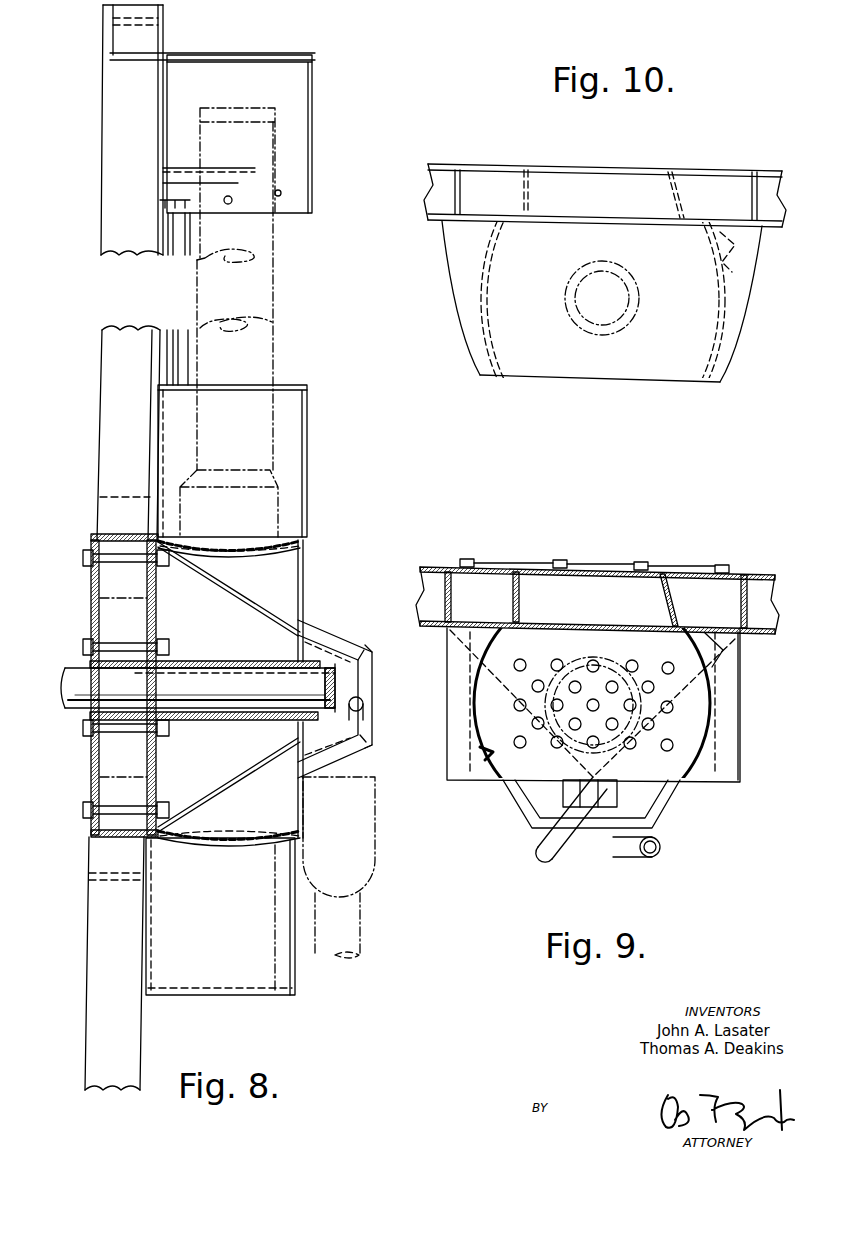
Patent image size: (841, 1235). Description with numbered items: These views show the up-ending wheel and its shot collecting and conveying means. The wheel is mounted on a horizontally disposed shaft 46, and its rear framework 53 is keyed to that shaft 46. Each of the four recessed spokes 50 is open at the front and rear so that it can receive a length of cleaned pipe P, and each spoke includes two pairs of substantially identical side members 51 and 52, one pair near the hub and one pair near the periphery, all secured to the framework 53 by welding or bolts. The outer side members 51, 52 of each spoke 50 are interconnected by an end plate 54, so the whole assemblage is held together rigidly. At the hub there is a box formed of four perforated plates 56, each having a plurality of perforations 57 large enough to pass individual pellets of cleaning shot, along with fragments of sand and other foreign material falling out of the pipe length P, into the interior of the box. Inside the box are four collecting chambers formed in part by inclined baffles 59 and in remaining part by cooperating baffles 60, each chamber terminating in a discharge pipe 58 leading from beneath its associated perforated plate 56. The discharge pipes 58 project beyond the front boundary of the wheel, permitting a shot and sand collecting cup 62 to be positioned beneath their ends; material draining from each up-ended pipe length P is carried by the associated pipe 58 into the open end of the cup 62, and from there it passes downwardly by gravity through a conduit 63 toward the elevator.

In FIG. 8, the shaft 46 is at (68, 683).
In FIG. 8, the spoke 50 is at (290, 91).
In FIG. 10, the spoke 50 is at (505, 290).
In FIG. 9, the spoke 50 is at (695, 720).
In FIG. 10, the side member 51 is at (465, 330).
In FIG. 9, the side member 51 is at (458, 740).
In FIG. 8, the side member 52 is at (298, 165).
In FIG. 10, the side member 52 is at (732, 338).
In FIG. 9, the side member 52 is at (697, 770).
In FIG. 8, the rear framework 53 is at (120, 212).
In FIG. 10, the rear framework 53 is at (440, 190).
In FIG. 9, the rear framework 53 is at (433, 597).
In FIG. 8, the end plate 54 is at (240, 55).
In FIG. 10, the end plate 54 is at (560, 380).
In FIG. 8, the perforated plate 56 is at (250, 550).
In FIG. 9, the perforated plate 56 is at (502, 778).
In FIG. 8, the perforations 57 is at (208, 550).
In FIG. 9, the perforations 57 is at (556, 660).
In FIG. 8, the discharge pipe 58 is at (340, 633).
In FIG. 9, the discharge pipe 58 is at (622, 838).
In FIG. 8, the inclined baffle 59 is at (280, 595).
In FIG. 8, the baffle 60 is at (252, 595).
In FIG. 8, the shot and sand collecting cup 62 is at (373, 823).
In FIG. 8, the conduit 63 is at (358, 922).
In FIG. 8, the pipe P is at (273, 360).
In FIG. 10, the pipe P is at (640, 298).
In FIG. 9, the pipe P is at (600, 660).